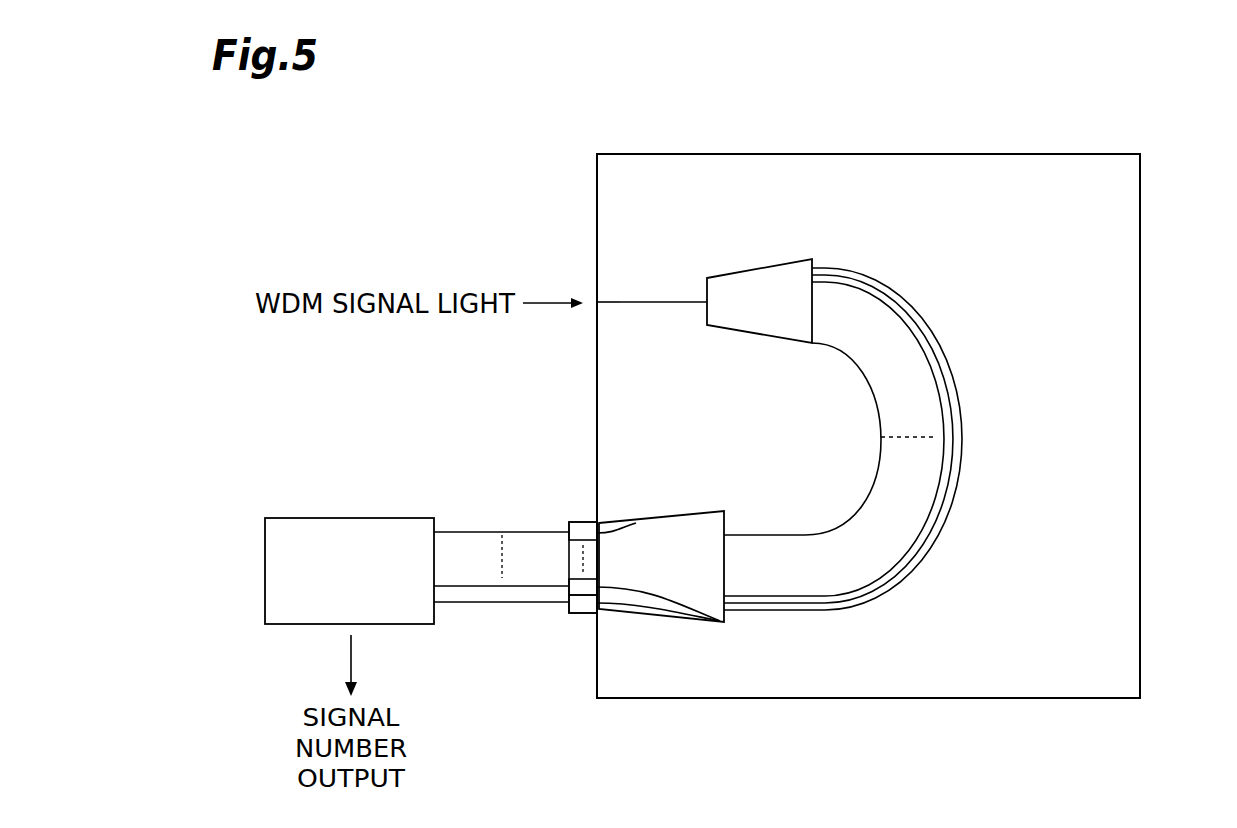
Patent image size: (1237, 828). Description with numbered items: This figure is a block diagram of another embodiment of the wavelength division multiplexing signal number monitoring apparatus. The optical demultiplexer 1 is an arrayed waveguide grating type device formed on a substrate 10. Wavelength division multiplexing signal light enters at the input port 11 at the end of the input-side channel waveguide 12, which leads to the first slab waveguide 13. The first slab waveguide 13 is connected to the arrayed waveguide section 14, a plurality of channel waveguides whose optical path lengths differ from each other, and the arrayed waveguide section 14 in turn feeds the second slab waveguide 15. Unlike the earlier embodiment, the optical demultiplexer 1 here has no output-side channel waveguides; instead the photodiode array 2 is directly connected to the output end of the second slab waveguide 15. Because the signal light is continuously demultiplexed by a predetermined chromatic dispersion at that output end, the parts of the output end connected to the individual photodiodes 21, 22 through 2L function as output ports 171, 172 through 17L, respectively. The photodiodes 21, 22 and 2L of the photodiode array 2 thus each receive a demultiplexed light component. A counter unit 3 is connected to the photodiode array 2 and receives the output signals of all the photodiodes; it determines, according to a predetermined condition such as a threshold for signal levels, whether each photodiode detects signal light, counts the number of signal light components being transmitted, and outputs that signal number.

The optical demultiplexer 1 is at (890, 154).
The substrate 10 is at (1140, 235).
The input port 11 is at (598, 305).
The input-side channel waveguide 12 is at (661, 300).
The first slab waveguide 13 is at (766, 285).
The arrayed waveguide section 14 is at (963, 395).
The second slab waveguide 15 is at (690, 525).
The output port 17L is at (620, 532).
The output port 171 is at (618, 605).
The output port 172 is at (633, 590).
The photodiode array 2 is at (538, 565).
The photodiode 2L is at (583, 528).
The photodiode 21 is at (582, 612).
The photodiode 22 is at (576, 589).
The counter unit 3 is at (352, 518).